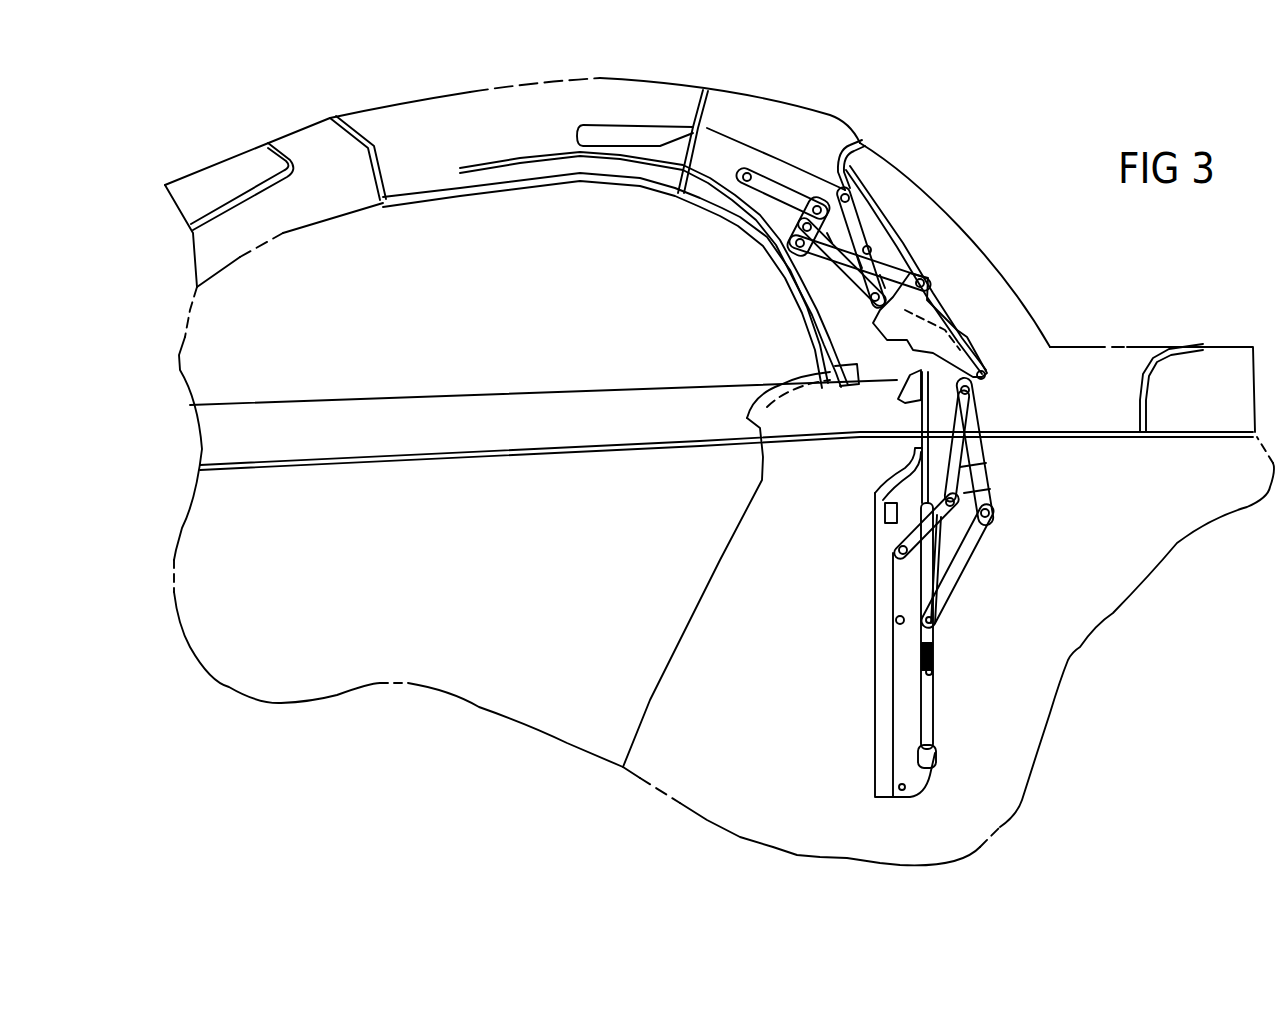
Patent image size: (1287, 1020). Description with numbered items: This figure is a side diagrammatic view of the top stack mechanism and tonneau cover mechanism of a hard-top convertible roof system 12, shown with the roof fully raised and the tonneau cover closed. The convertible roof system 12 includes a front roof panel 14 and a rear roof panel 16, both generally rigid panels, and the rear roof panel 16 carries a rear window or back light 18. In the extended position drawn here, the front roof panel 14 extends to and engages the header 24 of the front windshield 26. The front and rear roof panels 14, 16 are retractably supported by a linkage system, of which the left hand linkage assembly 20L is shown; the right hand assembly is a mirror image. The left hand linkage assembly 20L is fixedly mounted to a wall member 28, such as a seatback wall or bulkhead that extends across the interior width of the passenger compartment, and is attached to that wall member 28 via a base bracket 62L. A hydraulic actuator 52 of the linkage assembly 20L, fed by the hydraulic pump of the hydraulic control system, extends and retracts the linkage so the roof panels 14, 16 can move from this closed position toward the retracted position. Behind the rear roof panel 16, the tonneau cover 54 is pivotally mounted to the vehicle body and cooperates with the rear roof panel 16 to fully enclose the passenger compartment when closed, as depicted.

The convertible roof system 12 is at (803, 72).
The front roof panel 14 is at (610, 82).
The rear roof panel 16 is at (843, 127).
The rear window or back light 18 is at (967, 227).
The left hand linkage assembly 20L is at (997, 483).
The header 24 is at (310, 117).
The front windshield 26 is at (213, 163).
The wall member 28 is at (877, 487).
The hydraulic actuator 52 is at (930, 617).
The tonneau cover 54 is at (1135, 347).
The left base bracket 62L is at (910, 667).